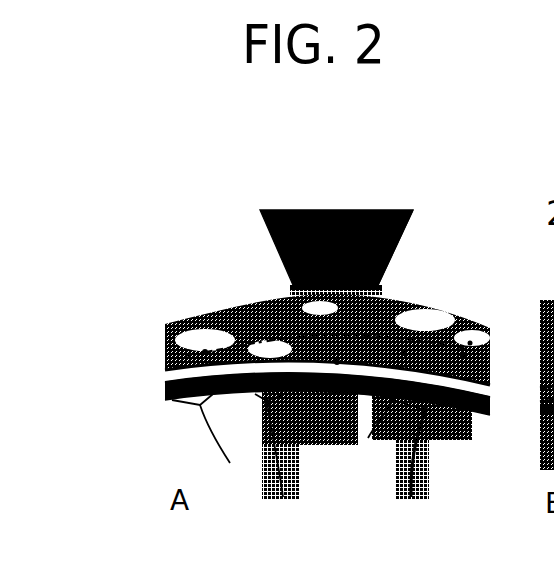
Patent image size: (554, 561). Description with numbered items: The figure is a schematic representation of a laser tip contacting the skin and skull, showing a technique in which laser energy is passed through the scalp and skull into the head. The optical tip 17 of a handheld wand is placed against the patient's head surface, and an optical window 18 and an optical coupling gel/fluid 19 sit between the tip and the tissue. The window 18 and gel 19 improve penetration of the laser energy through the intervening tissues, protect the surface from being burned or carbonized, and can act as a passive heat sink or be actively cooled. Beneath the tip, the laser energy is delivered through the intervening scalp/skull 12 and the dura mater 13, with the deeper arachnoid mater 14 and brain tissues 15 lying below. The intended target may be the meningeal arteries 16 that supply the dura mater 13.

The scalp/skull 12 is at (184, 322).
The dura mater 13 is at (167, 355).
The arachnoid mater 14 is at (167, 400).
The brain tissues 15 is at (173, 427).
The meningeal arteries 16 is at (404, 352).
The optical tip 17 is at (280, 209).
The optical window 18 is at (382, 286).
The optical coupling gel/fluid 19 is at (290, 285).